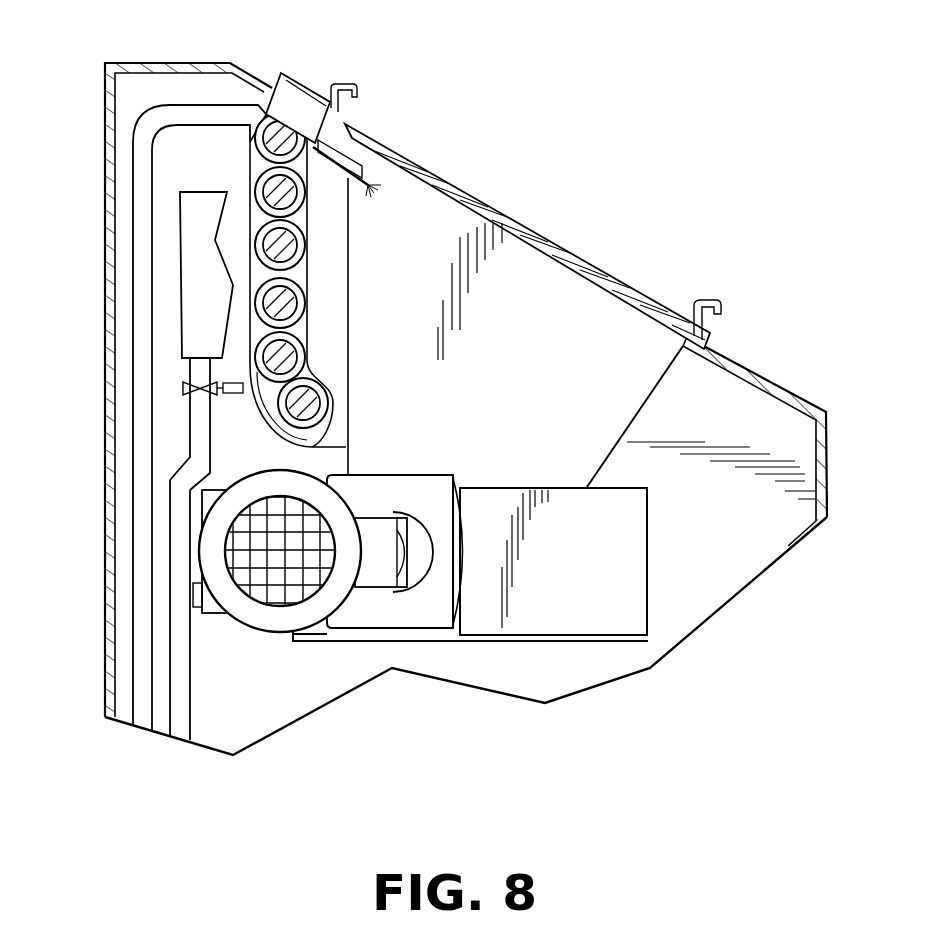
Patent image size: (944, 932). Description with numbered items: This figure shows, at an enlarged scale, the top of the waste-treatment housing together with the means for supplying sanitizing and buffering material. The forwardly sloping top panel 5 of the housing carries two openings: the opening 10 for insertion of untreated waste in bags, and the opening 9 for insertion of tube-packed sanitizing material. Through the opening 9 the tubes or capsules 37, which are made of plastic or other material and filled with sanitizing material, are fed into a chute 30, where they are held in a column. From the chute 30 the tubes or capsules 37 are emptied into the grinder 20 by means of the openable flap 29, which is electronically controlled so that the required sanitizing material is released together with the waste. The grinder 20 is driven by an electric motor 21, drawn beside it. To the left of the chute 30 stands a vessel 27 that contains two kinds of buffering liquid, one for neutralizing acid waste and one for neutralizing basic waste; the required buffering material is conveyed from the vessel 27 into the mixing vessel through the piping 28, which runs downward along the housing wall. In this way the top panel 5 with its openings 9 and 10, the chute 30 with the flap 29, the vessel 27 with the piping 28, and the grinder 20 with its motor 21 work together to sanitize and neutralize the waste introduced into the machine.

The top panel 5 is at (790, 397).
The opening 9 is at (286, 80).
The opening 10 is at (510, 208).
The grinder 20 is at (612, 625).
The electric motor 21 is at (260, 623).
The vessel 27 is at (187, 300).
The piping 28 is at (178, 720).
The flap 29 is at (346, 447).
The chute 30 is at (305, 245).
The tubes or capsules 37 is at (305, 305).